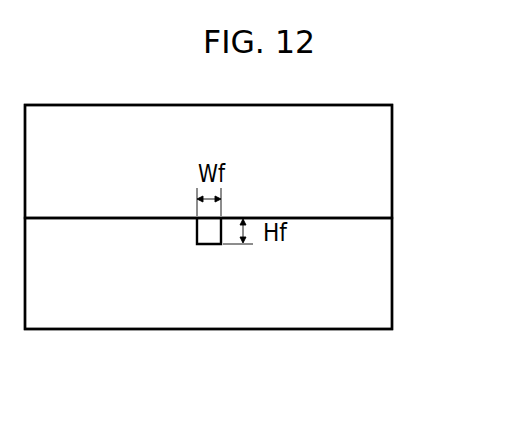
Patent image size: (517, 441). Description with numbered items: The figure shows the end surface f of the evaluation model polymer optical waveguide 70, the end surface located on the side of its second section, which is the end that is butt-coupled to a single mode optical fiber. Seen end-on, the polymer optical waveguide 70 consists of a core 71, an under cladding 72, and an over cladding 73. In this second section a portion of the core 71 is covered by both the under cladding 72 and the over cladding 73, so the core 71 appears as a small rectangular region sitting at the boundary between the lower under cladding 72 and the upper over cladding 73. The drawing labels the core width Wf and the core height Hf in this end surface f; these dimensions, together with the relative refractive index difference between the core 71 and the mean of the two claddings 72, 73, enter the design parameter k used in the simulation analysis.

The polymer optical waveguide 70 is at (413, 355).
The core 71 is at (207, 245).
The under cladding 72 is at (373, 174).
The over cladding 73 is at (375, 273).